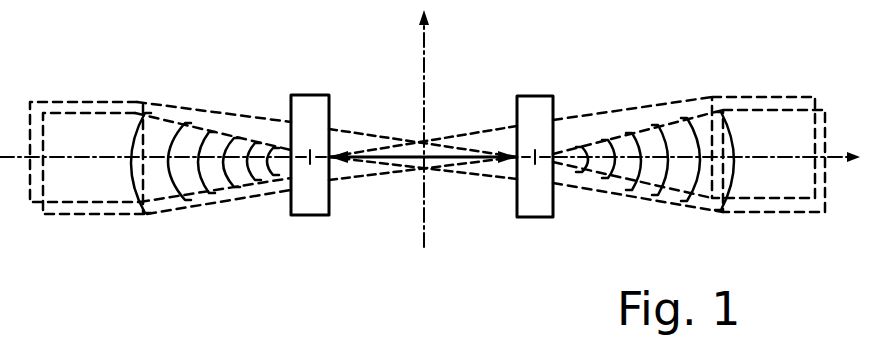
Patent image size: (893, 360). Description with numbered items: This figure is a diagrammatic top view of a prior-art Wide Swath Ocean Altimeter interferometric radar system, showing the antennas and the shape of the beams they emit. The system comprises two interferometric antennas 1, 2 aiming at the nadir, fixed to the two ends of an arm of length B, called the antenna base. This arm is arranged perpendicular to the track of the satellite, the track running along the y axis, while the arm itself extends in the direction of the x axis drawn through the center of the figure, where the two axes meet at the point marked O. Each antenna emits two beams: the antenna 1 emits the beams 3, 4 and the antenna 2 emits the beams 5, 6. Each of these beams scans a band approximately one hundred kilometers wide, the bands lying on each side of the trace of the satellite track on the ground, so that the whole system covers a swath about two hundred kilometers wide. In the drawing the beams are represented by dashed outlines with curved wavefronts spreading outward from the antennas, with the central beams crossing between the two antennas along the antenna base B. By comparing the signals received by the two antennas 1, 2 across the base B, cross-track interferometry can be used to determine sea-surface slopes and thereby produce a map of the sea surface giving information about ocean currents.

The interferometric antenna 1 is at (328, 95).
The interferometric antenna 2 is at (552, 217).
The beam 3 is at (217, 162).
The beam 4 is at (493, 136).
The beam 5 is at (614, 147).
The beam 6 is at (347, 175).
The antenna base length B is at (395, 150).
The origin of coordinate system O is at (425, 160).
The x axis x is at (430, 141).
The y axis y is at (415, 123).